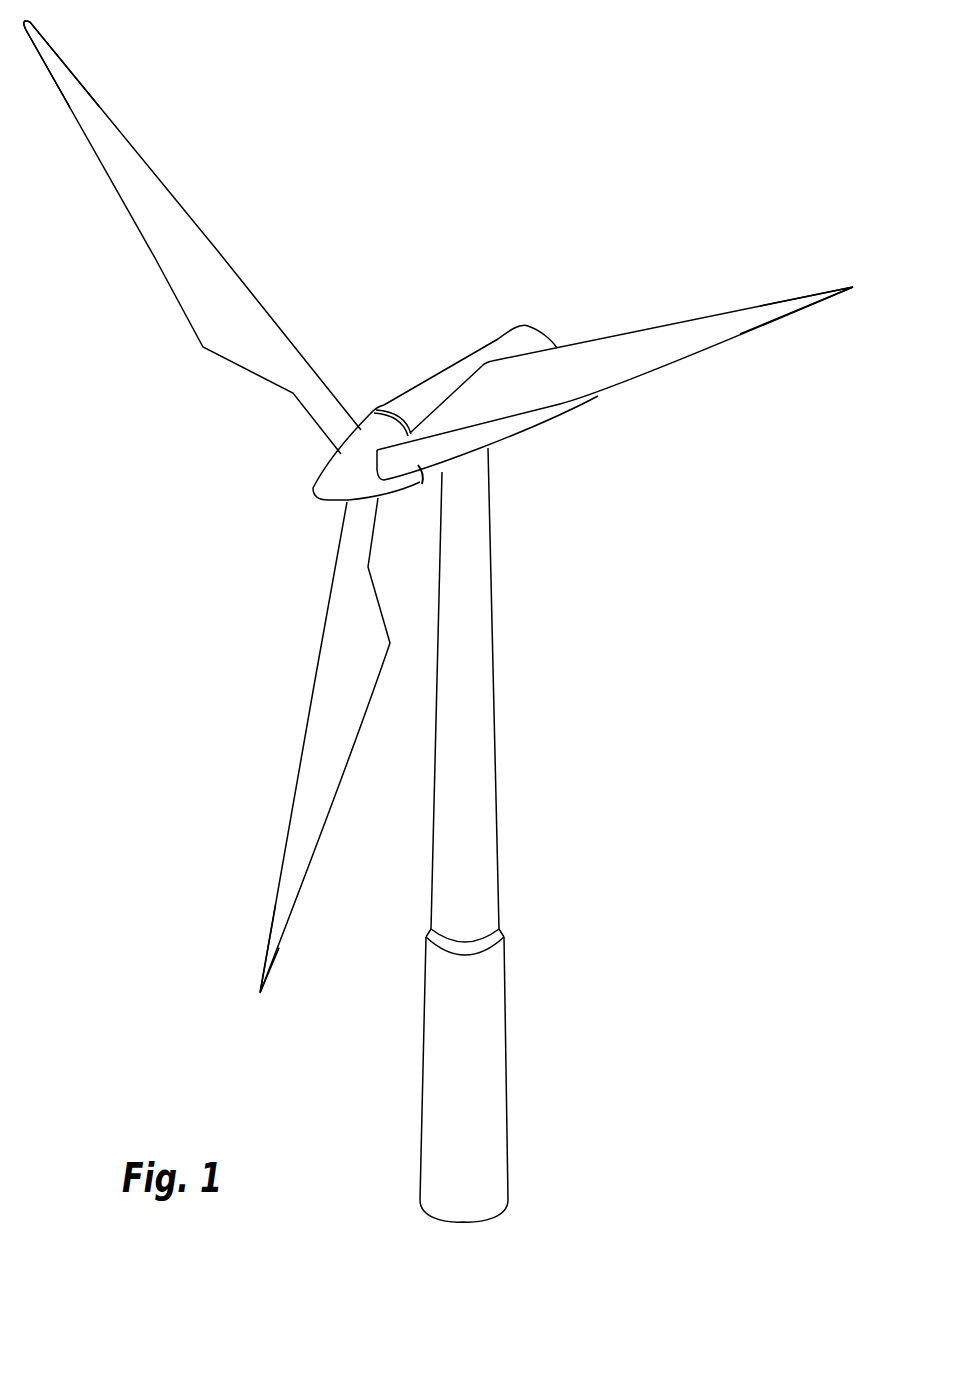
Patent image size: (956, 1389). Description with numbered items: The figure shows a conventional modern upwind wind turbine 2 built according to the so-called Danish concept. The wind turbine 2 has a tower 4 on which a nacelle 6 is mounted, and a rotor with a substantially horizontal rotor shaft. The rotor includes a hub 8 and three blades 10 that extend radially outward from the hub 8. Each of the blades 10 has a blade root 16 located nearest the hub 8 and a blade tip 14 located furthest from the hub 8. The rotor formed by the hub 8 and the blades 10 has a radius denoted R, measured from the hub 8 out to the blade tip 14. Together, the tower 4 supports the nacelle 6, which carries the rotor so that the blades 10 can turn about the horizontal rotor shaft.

The wind turbine 2 is at (438, 621).
The tower 4 is at (480, 692).
The nacelle 6 is at (428, 390).
The hub 8 is at (333, 475).
The blades 10 is at (222, 323).
The blade tip 14 is at (63, 78).
The blade root 16 is at (340, 430).